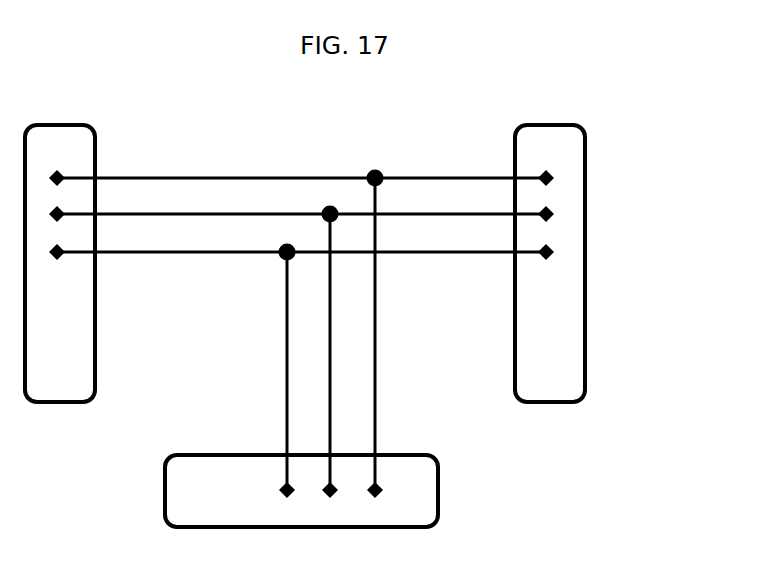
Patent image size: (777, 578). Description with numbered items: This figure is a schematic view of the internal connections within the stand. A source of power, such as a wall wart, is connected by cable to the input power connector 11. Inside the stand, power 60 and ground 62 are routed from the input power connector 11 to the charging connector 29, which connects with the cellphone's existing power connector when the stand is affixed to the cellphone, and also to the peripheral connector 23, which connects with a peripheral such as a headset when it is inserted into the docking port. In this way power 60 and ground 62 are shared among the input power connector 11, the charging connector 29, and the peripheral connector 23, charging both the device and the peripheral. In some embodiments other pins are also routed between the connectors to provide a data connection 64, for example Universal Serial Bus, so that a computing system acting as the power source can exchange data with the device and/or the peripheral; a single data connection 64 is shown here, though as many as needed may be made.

The input power connector 11 is at (95, 142).
The charging connector 29 is at (585, 170).
The peripheral connector 23 is at (438, 490).
The power 60 is at (298, 178).
The ground 62 is at (404, 214).
The data connection 64 is at (465, 252).